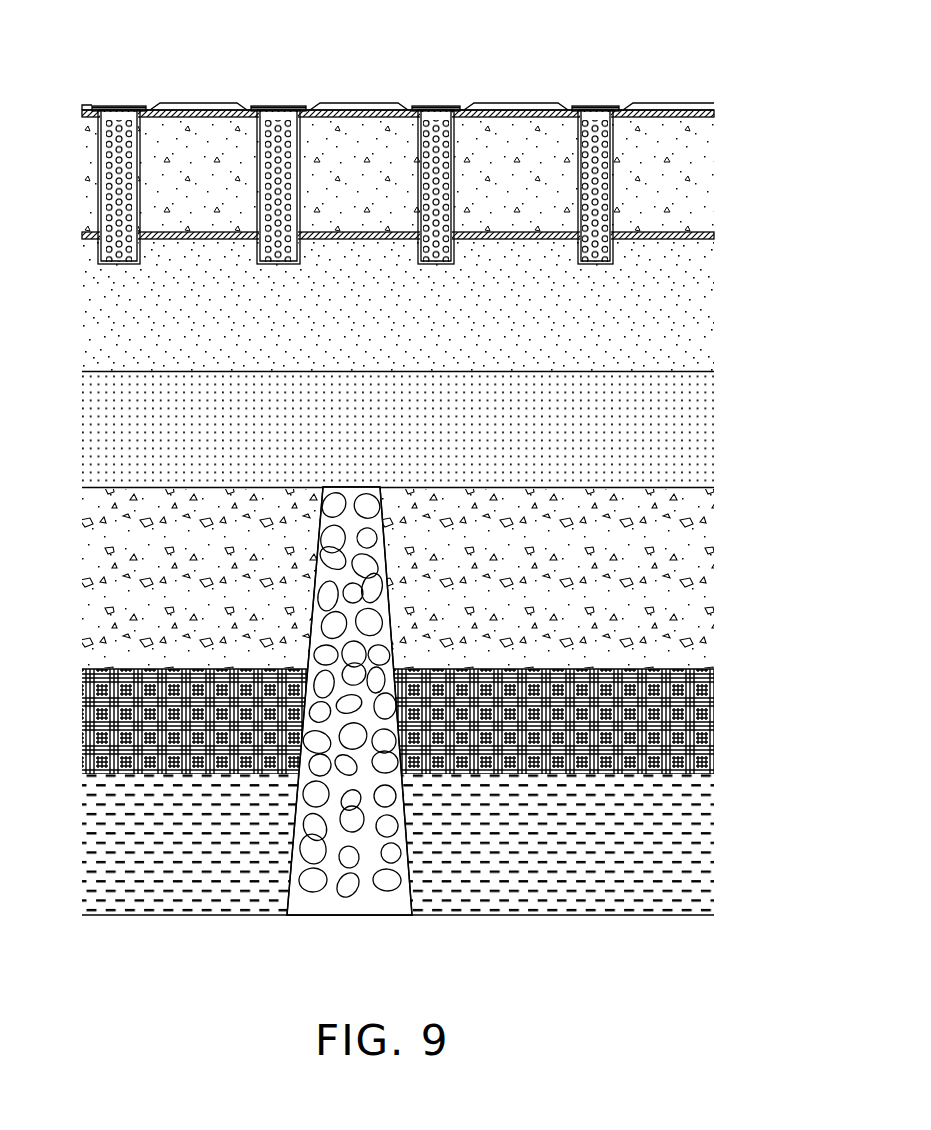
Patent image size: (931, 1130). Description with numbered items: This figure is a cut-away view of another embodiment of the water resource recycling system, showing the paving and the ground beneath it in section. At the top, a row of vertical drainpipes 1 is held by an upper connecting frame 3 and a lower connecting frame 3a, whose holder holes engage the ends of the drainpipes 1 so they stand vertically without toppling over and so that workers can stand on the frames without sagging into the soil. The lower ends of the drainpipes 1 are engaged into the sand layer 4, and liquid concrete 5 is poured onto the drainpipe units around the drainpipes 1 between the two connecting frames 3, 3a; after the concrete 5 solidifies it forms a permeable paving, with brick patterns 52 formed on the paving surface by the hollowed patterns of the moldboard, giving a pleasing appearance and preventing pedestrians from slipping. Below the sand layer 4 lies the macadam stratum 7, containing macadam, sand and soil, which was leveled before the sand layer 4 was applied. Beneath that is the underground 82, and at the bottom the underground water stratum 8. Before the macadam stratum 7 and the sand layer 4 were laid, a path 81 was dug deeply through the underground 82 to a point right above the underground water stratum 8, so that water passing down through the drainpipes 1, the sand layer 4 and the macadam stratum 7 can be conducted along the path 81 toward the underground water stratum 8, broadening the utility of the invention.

The drainpipe 1 is at (622, 145).
The upper connecting frame 3 is at (535, 112).
The lower connecting frame 3a is at (670, 232).
The sand layer 4 is at (665, 322).
The concrete 5 is at (695, 175).
The macadam stratum 7 is at (665, 440).
The underground water stratum 8 is at (642, 887).
The path 81 is at (315, 587).
The underground 82 is at (727, 508).
The brick pattern 52 is at (358, 103).